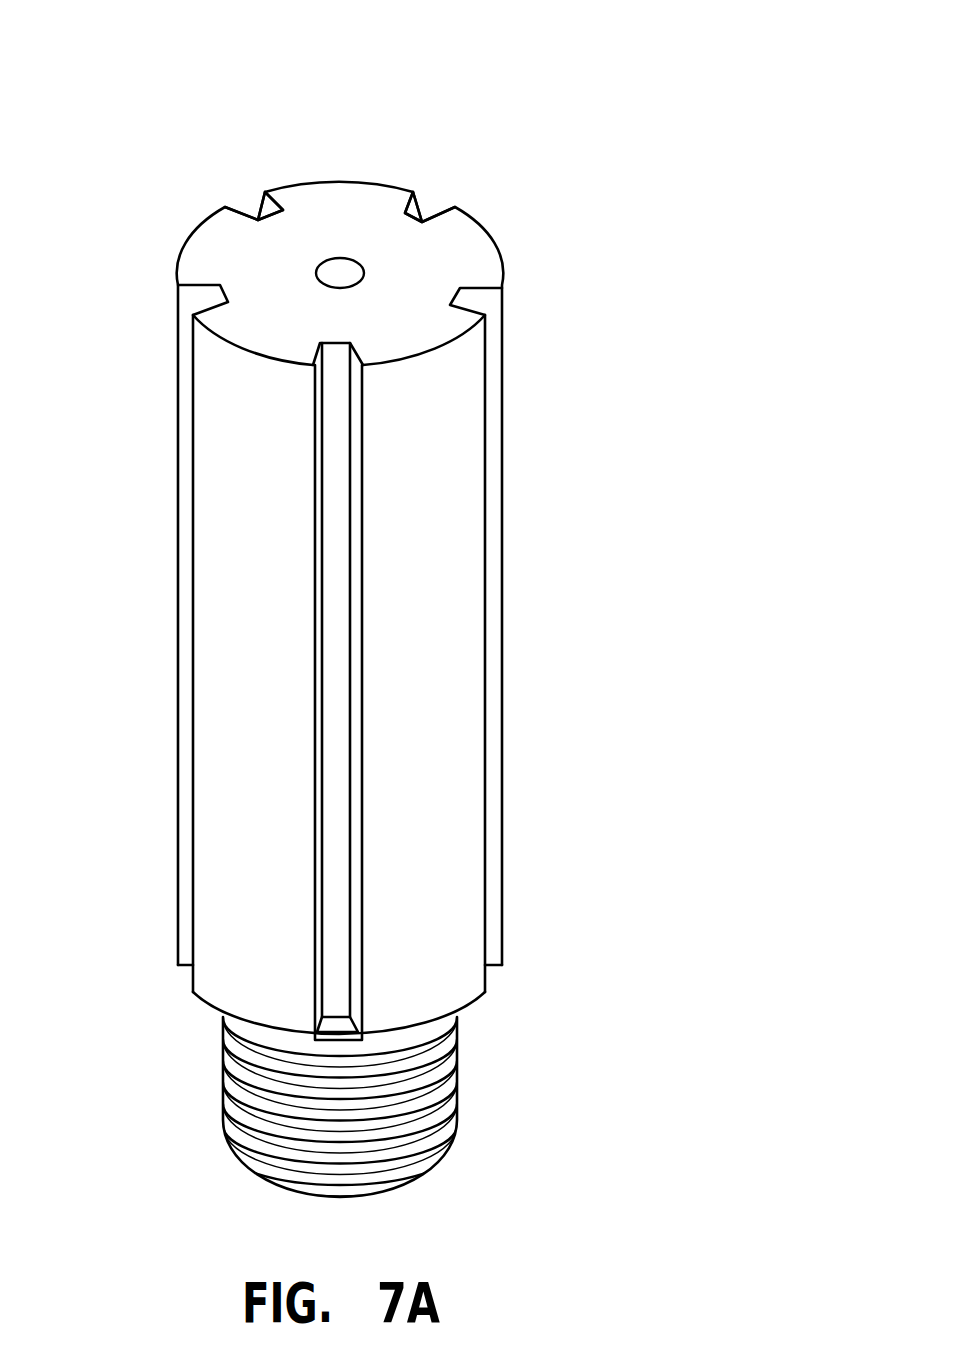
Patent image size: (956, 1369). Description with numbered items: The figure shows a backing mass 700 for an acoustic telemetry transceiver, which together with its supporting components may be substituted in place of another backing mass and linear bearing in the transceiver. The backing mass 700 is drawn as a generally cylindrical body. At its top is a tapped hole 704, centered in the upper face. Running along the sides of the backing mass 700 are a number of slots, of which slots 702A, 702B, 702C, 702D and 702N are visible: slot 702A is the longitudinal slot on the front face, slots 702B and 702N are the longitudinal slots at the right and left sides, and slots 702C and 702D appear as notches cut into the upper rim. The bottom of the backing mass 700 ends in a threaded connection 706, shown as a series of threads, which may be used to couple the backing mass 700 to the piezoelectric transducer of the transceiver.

The backing mass 700 is at (510, 86).
The slot 702A is at (338, 758).
The slot 702B is at (492, 618).
The slot 702C is at (424, 220).
The slot 702D is at (259, 218).
The slot 702N is at (188, 620).
The tapped hole 704 is at (340, 275).
The threaded connection 706 is at (457, 1070).